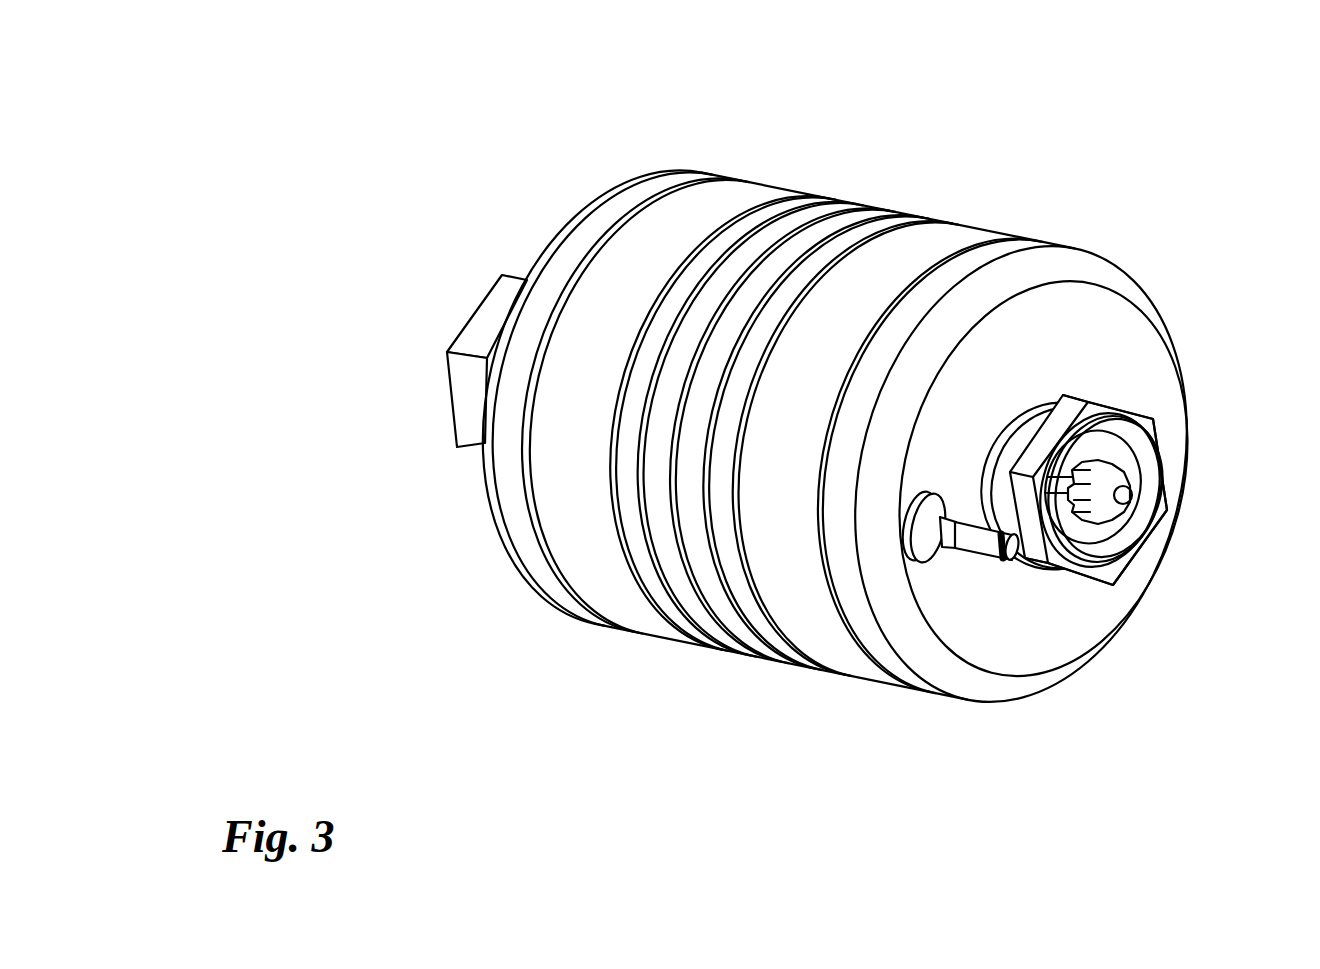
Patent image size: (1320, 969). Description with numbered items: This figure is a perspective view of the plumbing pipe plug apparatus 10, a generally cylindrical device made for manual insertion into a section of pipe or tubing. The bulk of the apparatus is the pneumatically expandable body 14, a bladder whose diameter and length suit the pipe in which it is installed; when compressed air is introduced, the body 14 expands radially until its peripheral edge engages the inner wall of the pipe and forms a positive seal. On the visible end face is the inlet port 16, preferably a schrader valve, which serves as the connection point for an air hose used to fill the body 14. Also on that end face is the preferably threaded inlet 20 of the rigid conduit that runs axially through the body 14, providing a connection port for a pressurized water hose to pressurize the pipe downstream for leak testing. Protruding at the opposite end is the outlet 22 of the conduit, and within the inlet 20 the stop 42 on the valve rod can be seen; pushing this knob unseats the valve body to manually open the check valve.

The plumbing pipe plug apparatus 10 is at (1124, 134).
The pneumatically expandable body 14 is at (928, 256).
The inlet port 16 is at (958, 562).
The inlet 20 is at (1133, 527).
The outlet 22 is at (462, 407).
The stop 42 is at (1120, 475).